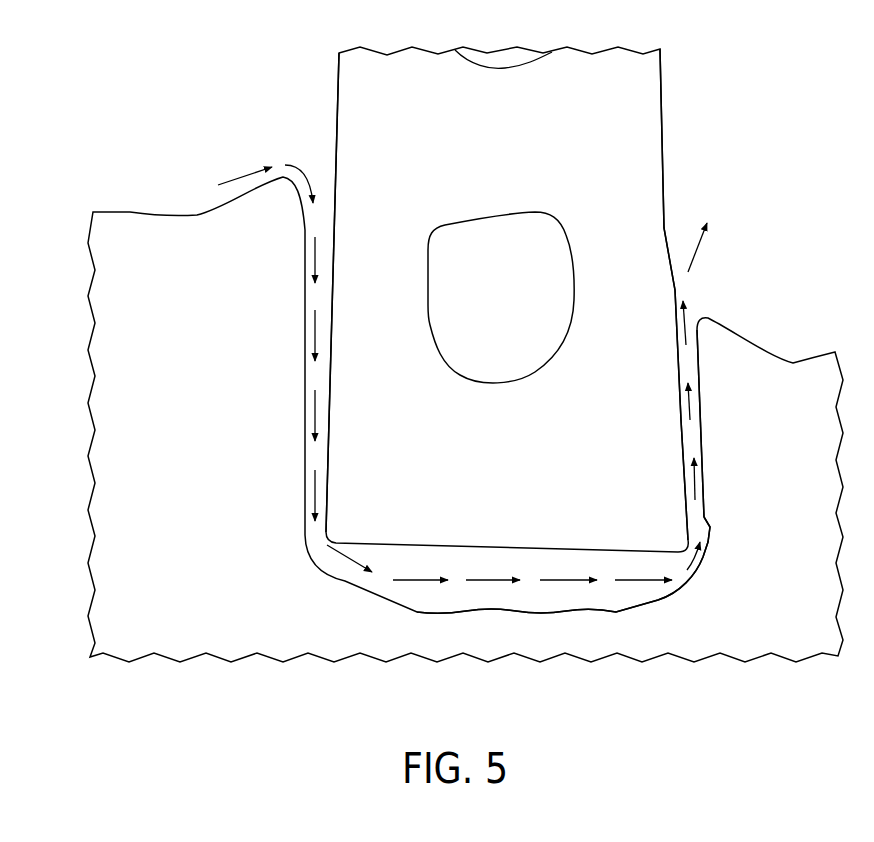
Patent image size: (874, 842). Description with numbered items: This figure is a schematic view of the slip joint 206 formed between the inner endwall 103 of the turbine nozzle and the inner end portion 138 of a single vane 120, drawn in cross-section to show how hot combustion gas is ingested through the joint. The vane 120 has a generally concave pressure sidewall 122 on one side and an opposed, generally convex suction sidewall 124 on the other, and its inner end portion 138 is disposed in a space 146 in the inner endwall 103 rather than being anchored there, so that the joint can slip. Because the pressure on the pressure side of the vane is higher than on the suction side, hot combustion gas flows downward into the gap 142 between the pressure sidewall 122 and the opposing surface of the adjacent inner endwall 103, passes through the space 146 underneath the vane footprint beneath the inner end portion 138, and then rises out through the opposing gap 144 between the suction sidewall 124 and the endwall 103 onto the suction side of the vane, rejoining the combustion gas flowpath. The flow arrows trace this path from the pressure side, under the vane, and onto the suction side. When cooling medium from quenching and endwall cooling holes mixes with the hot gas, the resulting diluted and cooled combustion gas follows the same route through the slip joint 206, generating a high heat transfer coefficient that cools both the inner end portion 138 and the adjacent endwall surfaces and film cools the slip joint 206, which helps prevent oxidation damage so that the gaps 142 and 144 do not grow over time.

The inner endwall 103 is at (135, 521).
The vane 120 is at (540, 84).
The pressure sidewall 122 is at (337, 116).
The suction sidewall 124 is at (667, 116).
The gap 142 is at (311, 229).
The opposing gap 144 is at (688, 343).
The slip joint 206 is at (710, 451).
The inner end portion 138 is at (694, 518).
The space 146 is at (533, 606).